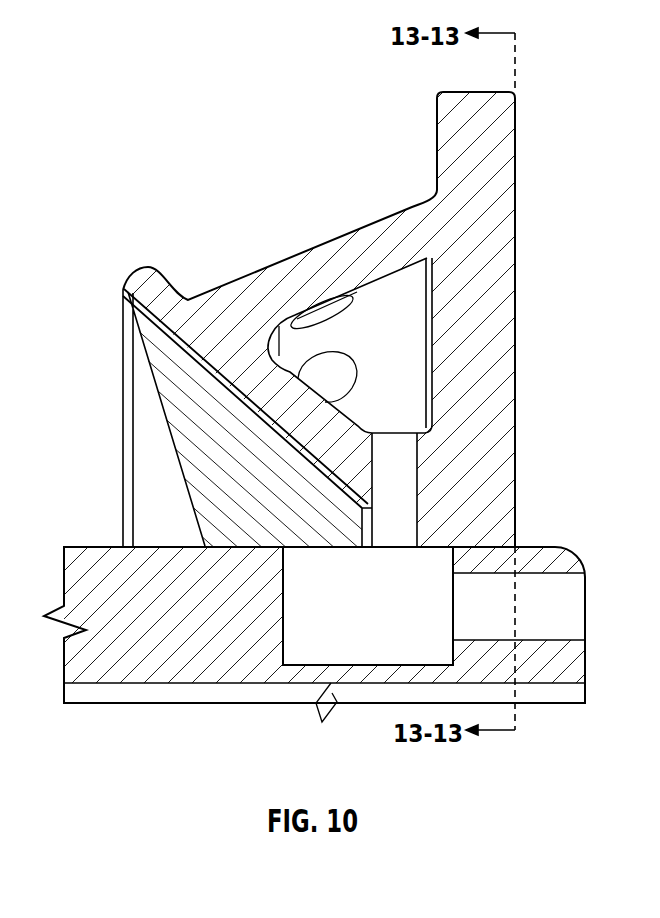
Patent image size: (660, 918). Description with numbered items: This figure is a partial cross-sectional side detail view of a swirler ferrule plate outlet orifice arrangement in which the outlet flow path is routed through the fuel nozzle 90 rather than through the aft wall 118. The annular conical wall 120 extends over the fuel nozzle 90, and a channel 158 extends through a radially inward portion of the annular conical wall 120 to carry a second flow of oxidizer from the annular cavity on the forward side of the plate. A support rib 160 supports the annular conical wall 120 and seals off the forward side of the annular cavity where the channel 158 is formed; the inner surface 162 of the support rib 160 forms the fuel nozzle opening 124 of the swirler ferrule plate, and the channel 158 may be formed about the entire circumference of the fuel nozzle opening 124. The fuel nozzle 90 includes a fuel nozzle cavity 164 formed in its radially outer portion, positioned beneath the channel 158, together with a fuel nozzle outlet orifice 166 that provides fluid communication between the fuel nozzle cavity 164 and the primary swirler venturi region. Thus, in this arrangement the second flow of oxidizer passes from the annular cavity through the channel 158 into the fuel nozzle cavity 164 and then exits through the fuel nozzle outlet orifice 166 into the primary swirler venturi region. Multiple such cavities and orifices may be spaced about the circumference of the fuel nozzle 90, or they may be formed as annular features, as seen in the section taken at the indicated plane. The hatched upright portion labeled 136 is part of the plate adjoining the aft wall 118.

The fuel nozzle 90 is at (224, 670).
The aft wall 118 is at (460, 92).
The annular conical wall 120 is at (191, 312).
The fuel nozzle opening 124 is at (462, 547).
The post 136 is at (515, 345).
The channel 158 is at (395, 497).
The support rib 160 is at (165, 360).
The inner surface 162 is at (245, 547).
The fuel nozzle cavity 164 is at (323, 635).
The fuel nozzle outlet orifice 166 is at (565, 612).